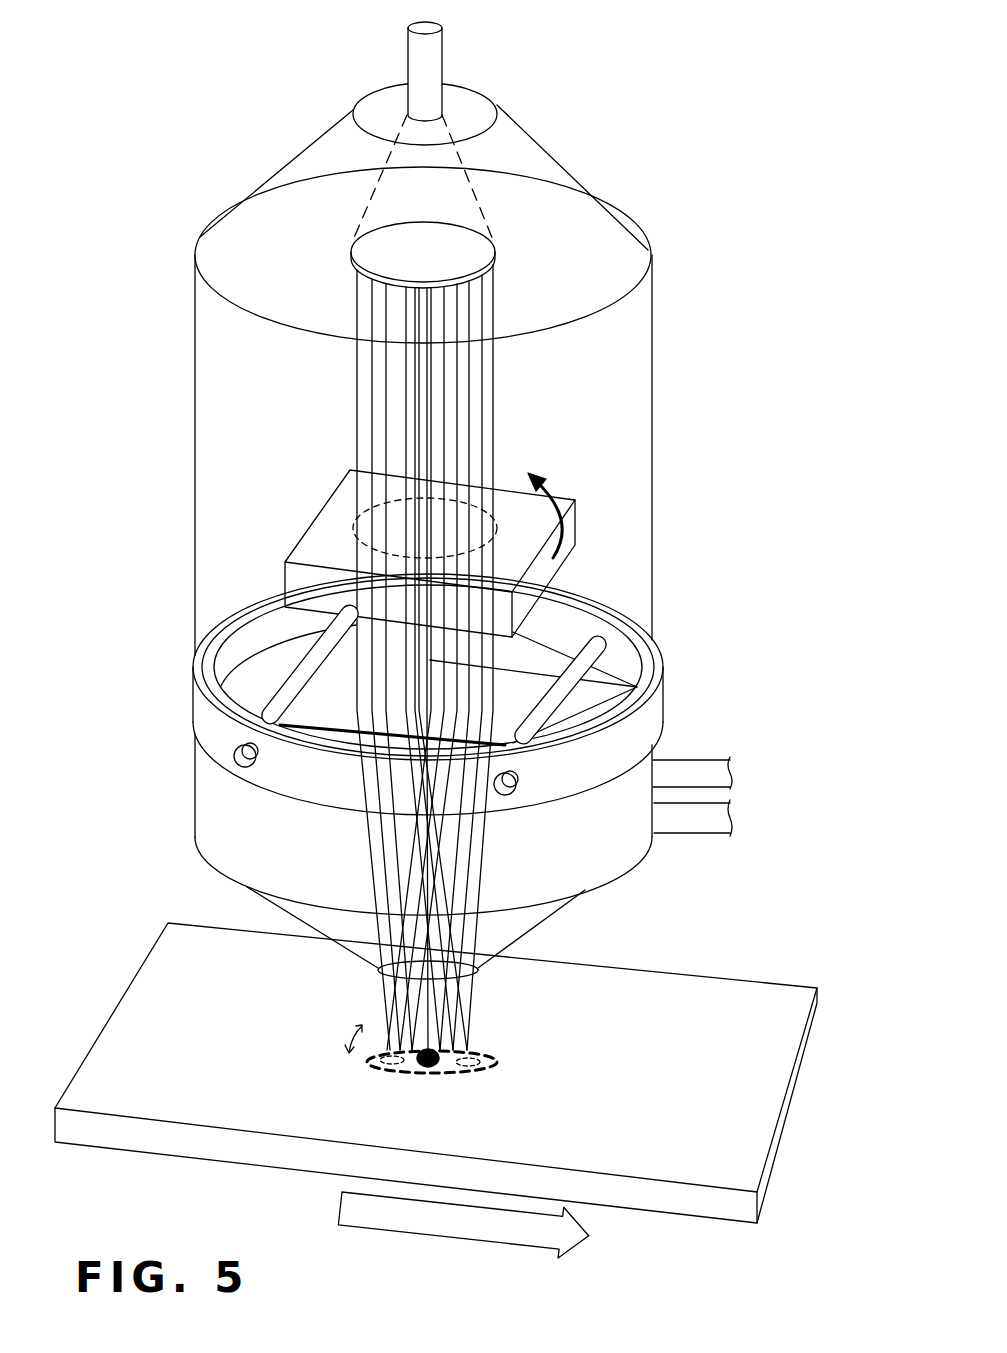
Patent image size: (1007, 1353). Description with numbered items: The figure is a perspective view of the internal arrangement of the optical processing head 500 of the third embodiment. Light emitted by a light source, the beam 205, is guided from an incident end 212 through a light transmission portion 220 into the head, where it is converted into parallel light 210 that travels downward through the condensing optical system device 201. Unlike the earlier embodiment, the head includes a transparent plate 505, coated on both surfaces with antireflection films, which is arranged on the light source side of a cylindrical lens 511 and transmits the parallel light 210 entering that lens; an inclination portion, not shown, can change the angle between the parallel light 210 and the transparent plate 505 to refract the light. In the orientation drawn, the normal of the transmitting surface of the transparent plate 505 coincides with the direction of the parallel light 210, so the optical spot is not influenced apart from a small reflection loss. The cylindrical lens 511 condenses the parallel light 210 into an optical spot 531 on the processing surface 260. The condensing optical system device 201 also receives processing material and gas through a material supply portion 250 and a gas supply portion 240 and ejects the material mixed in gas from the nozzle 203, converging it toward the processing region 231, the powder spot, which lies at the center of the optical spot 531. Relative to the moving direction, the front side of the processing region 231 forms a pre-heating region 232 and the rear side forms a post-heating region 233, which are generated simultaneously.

The optical processing head 500 is at (170, 190).
The condensing optical system device 201 is at (635, 372).
The nozzle 203 is at (537, 918).
The beam 205 is at (365, 207).
The parallel light 210 is at (485, 420).
The incident end 212 is at (440, 112).
The light transmission portion 220 is at (415, 63).
The processing region 231 is at (440, 1078).
The pre-heating region 232 is at (443, 1082).
The post-heating region 233 is at (408, 1074).
The gas supply portion 240 is at (708, 817).
The material supply portion 250 is at (698, 772).
The processing surface 260 is at (165, 997).
The transparent plate 505 is at (315, 538).
The cylindrical lens 511 is at (328, 692).
The optical spot 531 is at (497, 1060).